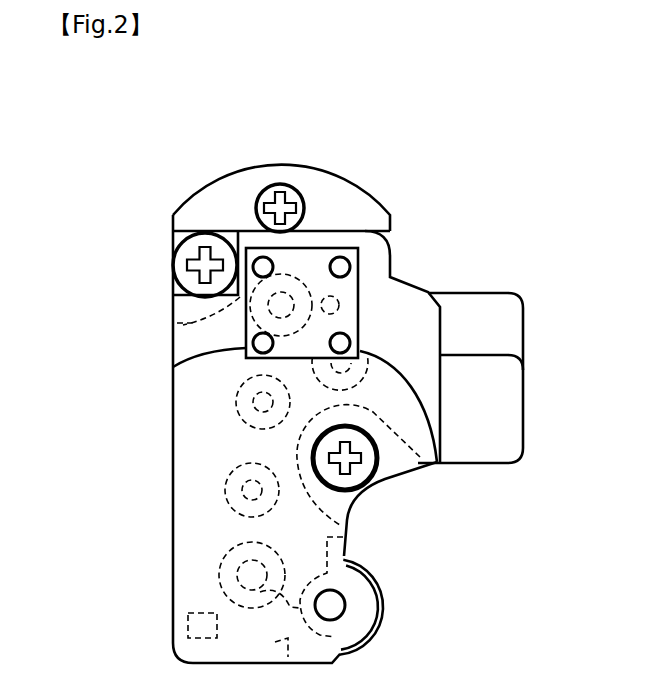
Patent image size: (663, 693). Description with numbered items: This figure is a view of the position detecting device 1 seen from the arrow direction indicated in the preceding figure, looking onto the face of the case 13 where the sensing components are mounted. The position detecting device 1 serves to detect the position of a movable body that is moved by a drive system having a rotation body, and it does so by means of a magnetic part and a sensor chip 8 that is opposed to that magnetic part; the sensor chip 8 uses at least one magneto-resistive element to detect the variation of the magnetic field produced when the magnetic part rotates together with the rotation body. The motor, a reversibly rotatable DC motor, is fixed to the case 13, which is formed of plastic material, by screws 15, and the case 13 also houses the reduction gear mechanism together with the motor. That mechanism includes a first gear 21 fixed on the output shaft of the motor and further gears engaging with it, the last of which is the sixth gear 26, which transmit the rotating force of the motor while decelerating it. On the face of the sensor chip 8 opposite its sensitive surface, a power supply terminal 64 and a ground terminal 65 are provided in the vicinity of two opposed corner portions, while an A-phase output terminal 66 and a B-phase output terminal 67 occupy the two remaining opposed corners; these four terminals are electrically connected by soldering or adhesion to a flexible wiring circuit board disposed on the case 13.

The position detecting device 1 is at (471, 206).
The sensor chip 8 is at (246, 325).
The case 13 is at (183, 527).
The screws 15 is at (268, 190).
The first gear 21 is at (312, 290).
The sixth gear 26 is at (387, 598).
The power supply terminal 64 is at (258, 256).
The ground terminal 65 is at (440, 463).
The A-phase output terminal 66 is at (359, 247).
The B-phase output terminal 67 is at (173, 367).